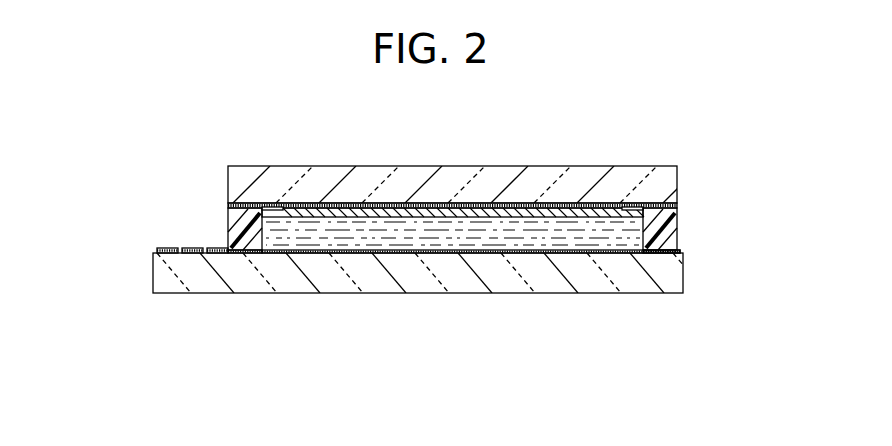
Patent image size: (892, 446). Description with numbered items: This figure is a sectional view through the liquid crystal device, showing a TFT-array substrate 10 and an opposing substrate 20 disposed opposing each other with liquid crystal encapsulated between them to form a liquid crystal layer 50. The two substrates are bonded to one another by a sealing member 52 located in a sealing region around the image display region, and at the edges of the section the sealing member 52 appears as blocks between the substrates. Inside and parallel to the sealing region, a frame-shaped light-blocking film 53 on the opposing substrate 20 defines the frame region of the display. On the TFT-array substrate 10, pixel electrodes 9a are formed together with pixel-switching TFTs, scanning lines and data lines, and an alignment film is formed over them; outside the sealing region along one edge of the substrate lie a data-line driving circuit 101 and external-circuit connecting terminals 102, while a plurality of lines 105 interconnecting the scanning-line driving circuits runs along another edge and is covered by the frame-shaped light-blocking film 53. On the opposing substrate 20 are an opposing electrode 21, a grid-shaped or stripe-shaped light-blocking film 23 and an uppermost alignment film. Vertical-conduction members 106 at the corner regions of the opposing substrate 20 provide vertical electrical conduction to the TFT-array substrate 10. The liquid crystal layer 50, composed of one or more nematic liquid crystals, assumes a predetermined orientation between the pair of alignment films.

The TFT-array substrate 10 is at (473, 283).
The pixel electrodes 9a is at (310, 253).
The opposing substrate 20 is at (370, 178).
The opposing electrode 21 is at (573, 208).
The light-blocking film 23 is at (440, 204).
The liquid crystal layer 50 is at (400, 240).
The sealing member 52 is at (226, 217).
The frame-shaped light-blocking film 53 is at (268, 204).
The data-line driving circuit 101 is at (206, 249).
The external-circuit connecting terminals 102 is at (163, 250).
The lines 105 is at (634, 246).
The vertical-conduction members 106 is at (243, 253).